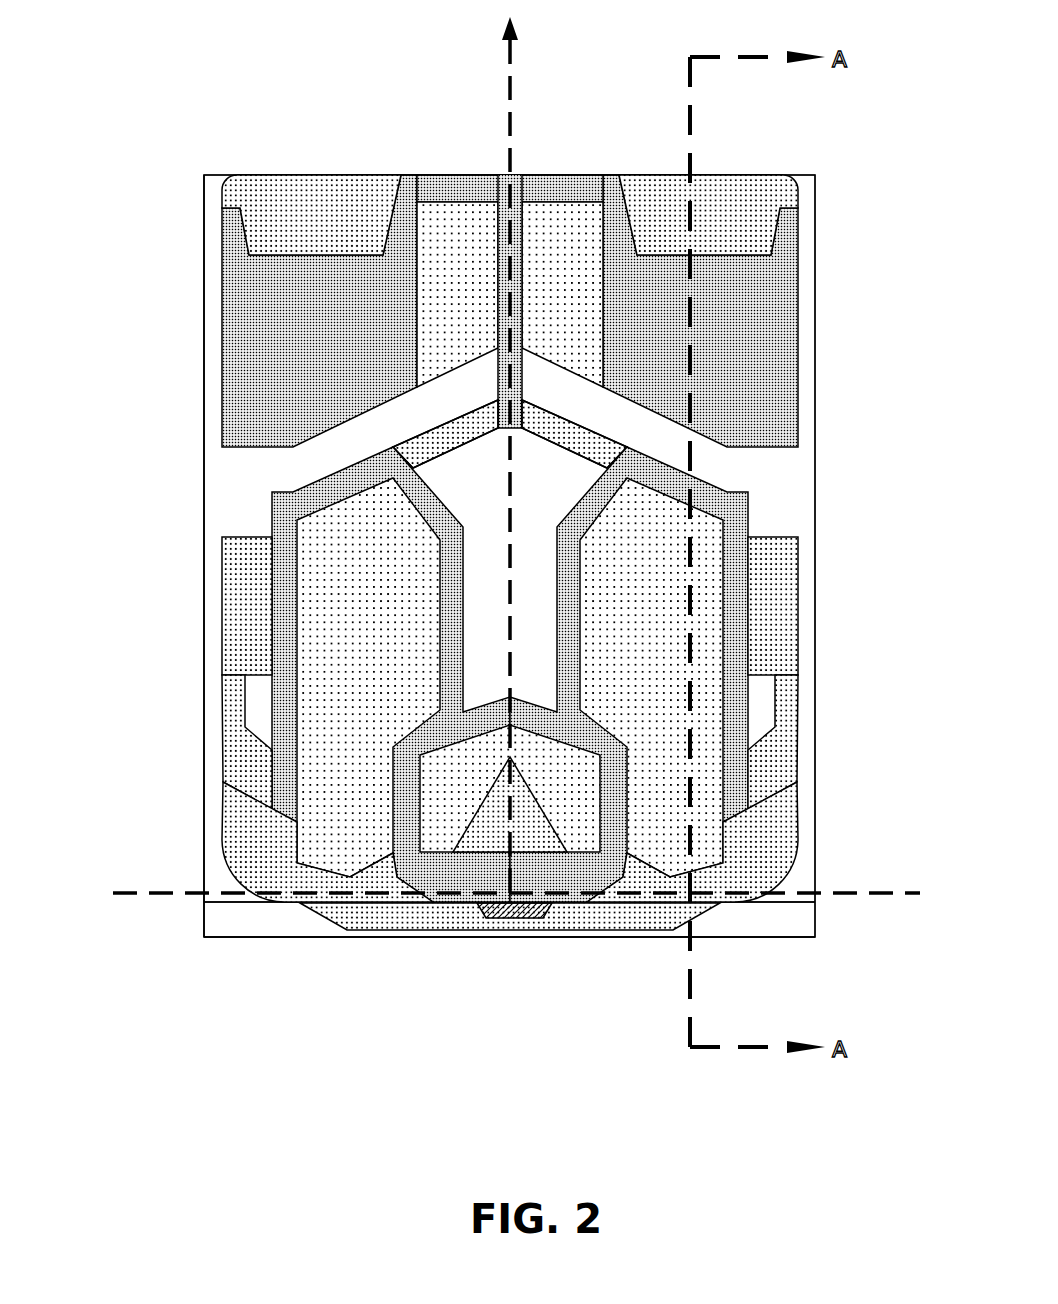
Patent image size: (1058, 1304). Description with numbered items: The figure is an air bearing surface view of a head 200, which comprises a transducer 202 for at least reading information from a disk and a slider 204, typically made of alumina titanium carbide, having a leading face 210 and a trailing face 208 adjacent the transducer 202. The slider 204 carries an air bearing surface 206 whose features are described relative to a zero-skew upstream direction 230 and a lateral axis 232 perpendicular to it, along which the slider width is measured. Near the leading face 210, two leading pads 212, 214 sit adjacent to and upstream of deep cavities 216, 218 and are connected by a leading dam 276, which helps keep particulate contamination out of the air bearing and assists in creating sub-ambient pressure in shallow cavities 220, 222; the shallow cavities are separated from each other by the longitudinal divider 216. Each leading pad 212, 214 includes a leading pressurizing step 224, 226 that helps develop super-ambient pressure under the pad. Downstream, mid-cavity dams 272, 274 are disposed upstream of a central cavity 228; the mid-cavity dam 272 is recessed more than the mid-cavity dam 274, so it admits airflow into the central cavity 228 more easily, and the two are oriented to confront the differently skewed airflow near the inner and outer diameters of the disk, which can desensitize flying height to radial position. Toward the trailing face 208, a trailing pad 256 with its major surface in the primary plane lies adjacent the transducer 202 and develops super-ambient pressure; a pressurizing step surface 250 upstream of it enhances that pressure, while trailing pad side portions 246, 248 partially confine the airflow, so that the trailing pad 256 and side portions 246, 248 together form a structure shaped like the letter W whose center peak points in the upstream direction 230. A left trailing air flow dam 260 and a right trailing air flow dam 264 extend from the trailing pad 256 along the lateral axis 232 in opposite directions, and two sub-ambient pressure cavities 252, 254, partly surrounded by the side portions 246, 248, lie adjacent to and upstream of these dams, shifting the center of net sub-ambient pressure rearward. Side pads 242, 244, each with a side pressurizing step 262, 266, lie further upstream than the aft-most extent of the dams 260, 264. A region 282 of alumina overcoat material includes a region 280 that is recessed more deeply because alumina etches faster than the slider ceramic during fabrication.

The head 200 is at (153, 90).
The transducer 202 is at (513, 908).
The slider 204 is at (203, 517).
The air bearing surface 206 is at (806, 272).
The trailing face 208 is at (266, 938).
The leading face 210 is at (373, 172).
The leading pad 212 is at (269, 345).
The leading pad 214 is at (724, 345).
The deep cavity 216 is at (503, 257).
The deep cavity 218 is at (634, 449).
The shallow cavity 220 is at (437, 287).
The shallow cavity 222 is at (545, 287).
The leading pressurizing step 224 is at (270, 230).
The leading pressurizing step 226 is at (709, 230).
The central cavity 228 is at (454, 502).
The zero-skew upstream direction 230 is at (496, 36).
The lateral axis 232 is at (176, 890).
The side pad 242 is at (237, 787).
The side pad 244 is at (741, 787).
The trailing pad side portion 246 is at (447, 637).
The trailing pad side portion 248 is at (573, 665).
The pressurizing step surface 250 is at (449, 777).
The sub-ambient pressure cavity 252 is at (339, 602).
The sub-ambient pressure cavity 254 is at (634, 602).
The trailing pad 256 is at (524, 859).
The left trailing air flow dam 260 is at (380, 878).
The side pressurizing step 262 is at (246, 567).
The right trailing air flow dam 264 is at (680, 880).
The side pressurizing step 266 is at (788, 588).
The mid-cavity dam 272 is at (437, 441).
The mid-cavity dam 274 is at (583, 441).
The leading dam 276 is at (582, 188).
The region 280 is at (347, 915).
The region 282 is at (223, 913).